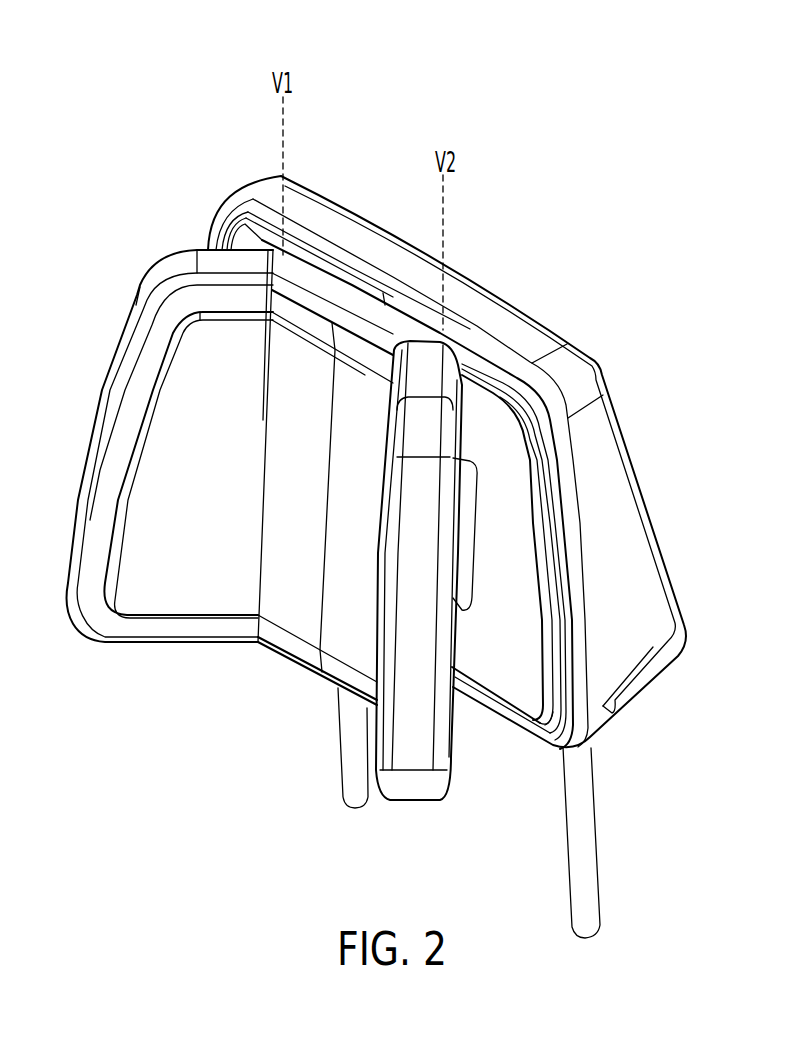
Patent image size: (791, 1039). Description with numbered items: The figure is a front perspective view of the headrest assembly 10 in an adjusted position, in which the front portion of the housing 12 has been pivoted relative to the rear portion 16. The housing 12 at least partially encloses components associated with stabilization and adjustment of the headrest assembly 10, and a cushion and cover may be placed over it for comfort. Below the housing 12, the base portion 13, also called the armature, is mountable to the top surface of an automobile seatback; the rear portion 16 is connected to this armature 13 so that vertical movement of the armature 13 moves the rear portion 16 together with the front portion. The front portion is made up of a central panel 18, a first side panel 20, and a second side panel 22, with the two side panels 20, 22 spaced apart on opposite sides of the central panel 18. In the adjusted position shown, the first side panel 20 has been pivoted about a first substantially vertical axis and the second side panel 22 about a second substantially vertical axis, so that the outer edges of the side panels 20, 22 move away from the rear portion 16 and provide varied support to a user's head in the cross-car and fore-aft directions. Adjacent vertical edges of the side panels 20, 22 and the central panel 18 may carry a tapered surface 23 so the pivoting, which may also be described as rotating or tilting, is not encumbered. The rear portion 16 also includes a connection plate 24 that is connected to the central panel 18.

The headrest assembly 10 is at (147, 127).
The housing 12 is at (650, 523).
The base portion 13 is at (583, 873).
The rear portion 16 is at (572, 381).
The central panel 18 is at (320, 287).
The first side panel 20 is at (167, 267).
The second side panel 22 is at (418, 368).
The tapered surface 23 is at (280, 293).
The connection plate 24 is at (527, 637).